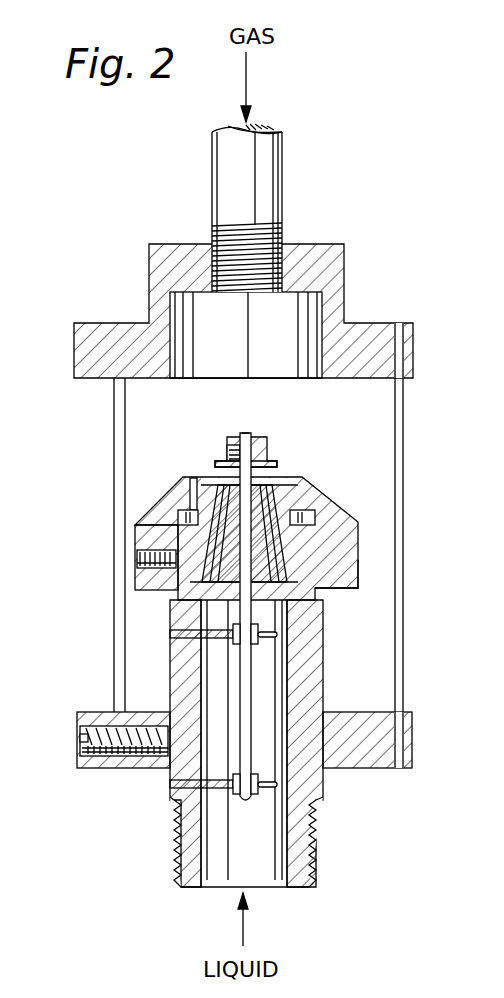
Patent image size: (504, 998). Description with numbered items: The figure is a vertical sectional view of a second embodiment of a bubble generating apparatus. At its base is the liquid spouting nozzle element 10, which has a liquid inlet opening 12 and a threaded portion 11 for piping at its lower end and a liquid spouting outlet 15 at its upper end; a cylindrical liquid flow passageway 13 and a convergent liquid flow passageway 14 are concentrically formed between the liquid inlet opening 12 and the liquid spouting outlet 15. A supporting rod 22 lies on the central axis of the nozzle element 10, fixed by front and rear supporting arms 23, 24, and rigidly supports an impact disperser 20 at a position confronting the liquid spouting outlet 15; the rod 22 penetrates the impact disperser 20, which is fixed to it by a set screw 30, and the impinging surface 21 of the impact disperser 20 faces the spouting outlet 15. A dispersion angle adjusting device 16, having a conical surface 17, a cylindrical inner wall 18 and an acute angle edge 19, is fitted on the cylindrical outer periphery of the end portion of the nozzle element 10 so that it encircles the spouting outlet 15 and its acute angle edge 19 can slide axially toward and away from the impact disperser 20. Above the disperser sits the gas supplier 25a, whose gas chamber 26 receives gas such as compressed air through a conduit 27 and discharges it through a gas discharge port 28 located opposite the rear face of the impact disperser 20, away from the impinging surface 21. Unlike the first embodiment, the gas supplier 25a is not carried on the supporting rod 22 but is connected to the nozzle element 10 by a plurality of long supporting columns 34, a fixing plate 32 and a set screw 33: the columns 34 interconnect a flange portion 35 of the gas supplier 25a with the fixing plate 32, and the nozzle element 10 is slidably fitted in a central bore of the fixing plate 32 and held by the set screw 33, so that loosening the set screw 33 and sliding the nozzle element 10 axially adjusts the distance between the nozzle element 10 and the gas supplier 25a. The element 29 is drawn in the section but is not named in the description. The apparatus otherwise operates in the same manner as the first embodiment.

The liquid spouting nozzle element 10 is at (332, 661).
The threaded portion 11 is at (312, 838).
The liquid inlet opening 12 is at (258, 880).
The cylindrical liquid flow passageway 13 is at (262, 854).
The convergent liquid flow passageway 14 is at (278, 574).
The liquid spouting outlet 15 is at (220, 495).
The dispersion angle adjusting device 16 is at (359, 545).
The conical surface 17 is at (333, 506).
The cylindrical inner wall 18 is at (183, 508).
The acute angle edge 19 is at (190, 478).
The impact disperser 20 is at (280, 447).
The impinging surface 21 is at (278, 467).
The supporting rod 22 is at (250, 690).
The front supporting arm 23 is at (170, 636).
The rear supporting arm 24 is at (185, 786).
The gas supplier 25a is at (352, 268).
The gas chamber 26 is at (272, 343).
The conduit 27 is at (283, 167).
The gas discharge port 28 is at (275, 368).
The spring ring 29 is at (140, 558).
The set screw 30 is at (226, 448).
The fixing plate 32 is at (358, 770).
The set screw 33 is at (80, 738).
The long supporting columns 34 is at (113, 475).
The flange portion 35 is at (75, 355).